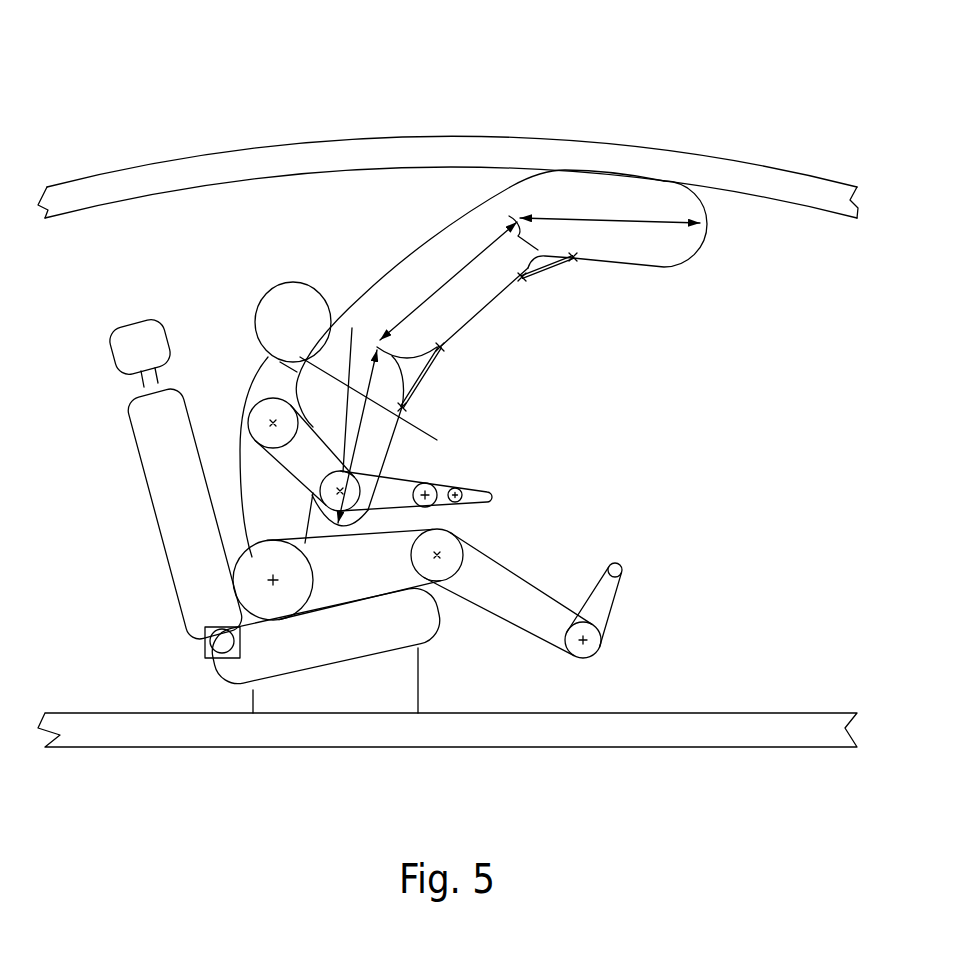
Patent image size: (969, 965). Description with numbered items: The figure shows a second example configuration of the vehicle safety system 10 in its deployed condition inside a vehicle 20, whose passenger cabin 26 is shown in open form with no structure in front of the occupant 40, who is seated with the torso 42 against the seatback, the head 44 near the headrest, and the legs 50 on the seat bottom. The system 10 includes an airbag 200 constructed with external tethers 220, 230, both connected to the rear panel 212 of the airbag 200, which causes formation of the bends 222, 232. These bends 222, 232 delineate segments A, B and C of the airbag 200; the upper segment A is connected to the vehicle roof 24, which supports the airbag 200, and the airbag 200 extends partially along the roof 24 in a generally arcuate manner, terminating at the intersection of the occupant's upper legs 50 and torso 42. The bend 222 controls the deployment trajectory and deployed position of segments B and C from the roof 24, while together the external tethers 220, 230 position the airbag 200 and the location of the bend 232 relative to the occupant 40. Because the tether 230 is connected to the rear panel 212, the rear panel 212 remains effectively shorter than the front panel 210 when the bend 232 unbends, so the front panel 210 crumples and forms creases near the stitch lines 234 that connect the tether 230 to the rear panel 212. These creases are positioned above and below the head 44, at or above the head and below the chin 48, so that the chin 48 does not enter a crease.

The vehicle safety system 10 is at (555, 117).
The vehicle 20 is at (152, 125).
The vehicle roof 24 is at (673, 165).
The passenger cabin 26 is at (162, 230).
The occupant 40 is at (245, 368).
The torso 42 is at (263, 507).
The head 44 is at (287, 297).
The chin 48 is at (382, 407).
The legs 50 is at (330, 578).
The airbag 200 is at (475, 293).
The front panel 210 is at (433, 233).
The rear panel 212 is at (467, 327).
The external tether 220 is at (545, 275).
The bend 222 is at (508, 212).
The external tether 230 is at (420, 380).
The bend 232 is at (352, 325).
The stitch lines 234 is at (443, 353).